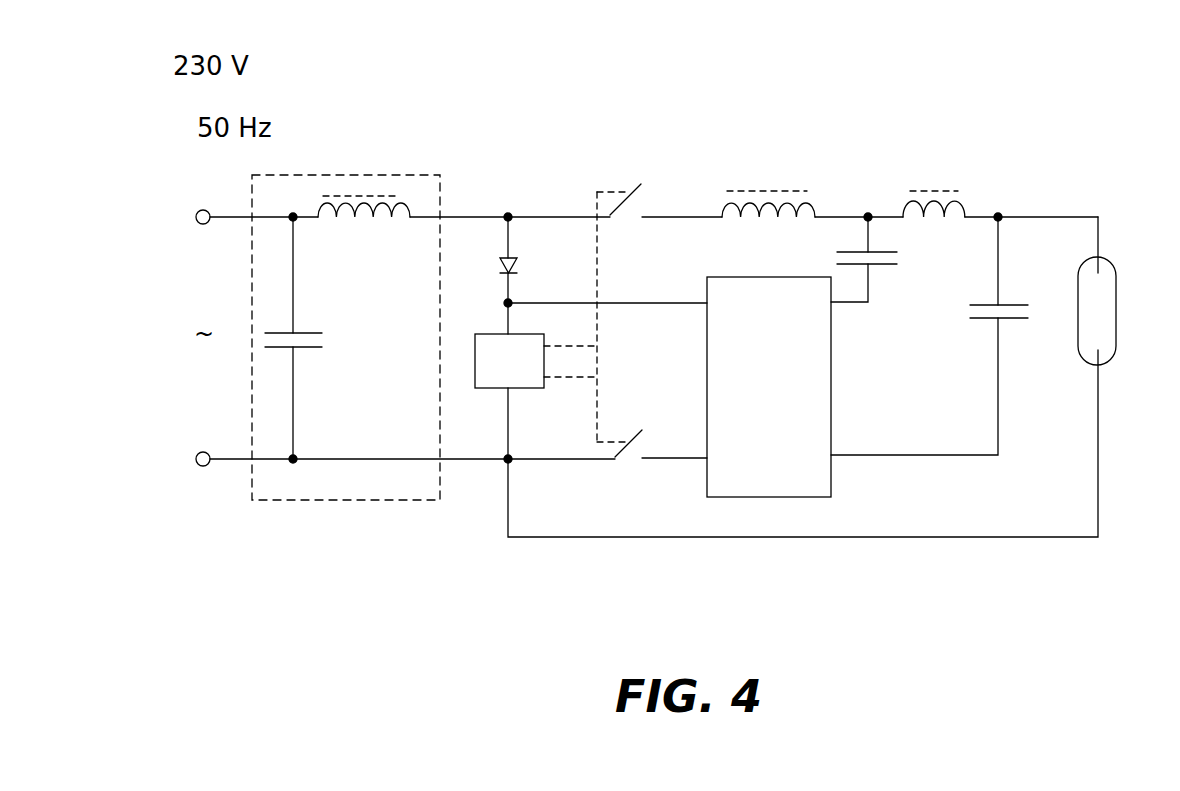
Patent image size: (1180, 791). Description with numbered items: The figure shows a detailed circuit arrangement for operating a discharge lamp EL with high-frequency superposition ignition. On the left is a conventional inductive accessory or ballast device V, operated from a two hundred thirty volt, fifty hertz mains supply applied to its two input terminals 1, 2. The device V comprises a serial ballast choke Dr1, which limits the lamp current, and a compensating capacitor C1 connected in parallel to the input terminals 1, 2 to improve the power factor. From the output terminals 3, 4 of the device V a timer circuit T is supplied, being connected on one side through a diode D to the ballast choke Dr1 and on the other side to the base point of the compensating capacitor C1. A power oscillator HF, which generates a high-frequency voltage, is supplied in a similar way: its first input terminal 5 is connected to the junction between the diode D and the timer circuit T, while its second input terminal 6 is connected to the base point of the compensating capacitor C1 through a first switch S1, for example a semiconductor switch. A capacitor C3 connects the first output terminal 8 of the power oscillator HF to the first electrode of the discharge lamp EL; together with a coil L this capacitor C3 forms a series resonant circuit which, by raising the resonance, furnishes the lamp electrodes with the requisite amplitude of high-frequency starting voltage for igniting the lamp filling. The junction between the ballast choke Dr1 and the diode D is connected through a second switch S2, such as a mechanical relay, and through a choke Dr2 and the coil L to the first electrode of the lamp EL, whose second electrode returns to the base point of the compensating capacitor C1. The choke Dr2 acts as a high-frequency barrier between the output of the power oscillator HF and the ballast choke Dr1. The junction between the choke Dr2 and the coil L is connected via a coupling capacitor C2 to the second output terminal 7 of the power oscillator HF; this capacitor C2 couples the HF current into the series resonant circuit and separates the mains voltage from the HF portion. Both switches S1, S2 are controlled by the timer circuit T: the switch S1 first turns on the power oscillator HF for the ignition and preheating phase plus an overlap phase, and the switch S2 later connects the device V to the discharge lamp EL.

The input terminal 1 is at (244, 207).
The input terminal 2 is at (244, 472).
The output terminal 3 is at (452, 200).
The output terminal 4 is at (400, 476).
The first input terminal 5 is at (616, 303).
The second input terminal 6 is at (720, 458).
The second output terminal 7 is at (816, 303).
The first output terminal 8 is at (816, 458).
The inductive accessory or ballast device V is at (316, 500).
The ballast choke Dr1 is at (400, 183).
The choke Dr2 is at (812, 186).
The coil L is at (1000, 186).
The compensating capacitor C1 is at (311, 338).
The coupling capacitor C2 is at (882, 257).
The capacitor C3 is at (932, 334).
The diode D is at (519, 273).
The timer circuit T is at (536, 398).
The first switch S1 is at (607, 460).
The second switch S2 is at (615, 294).
The power oscillator HF is at (769, 387).
The discharge lamp EL is at (828, 377).